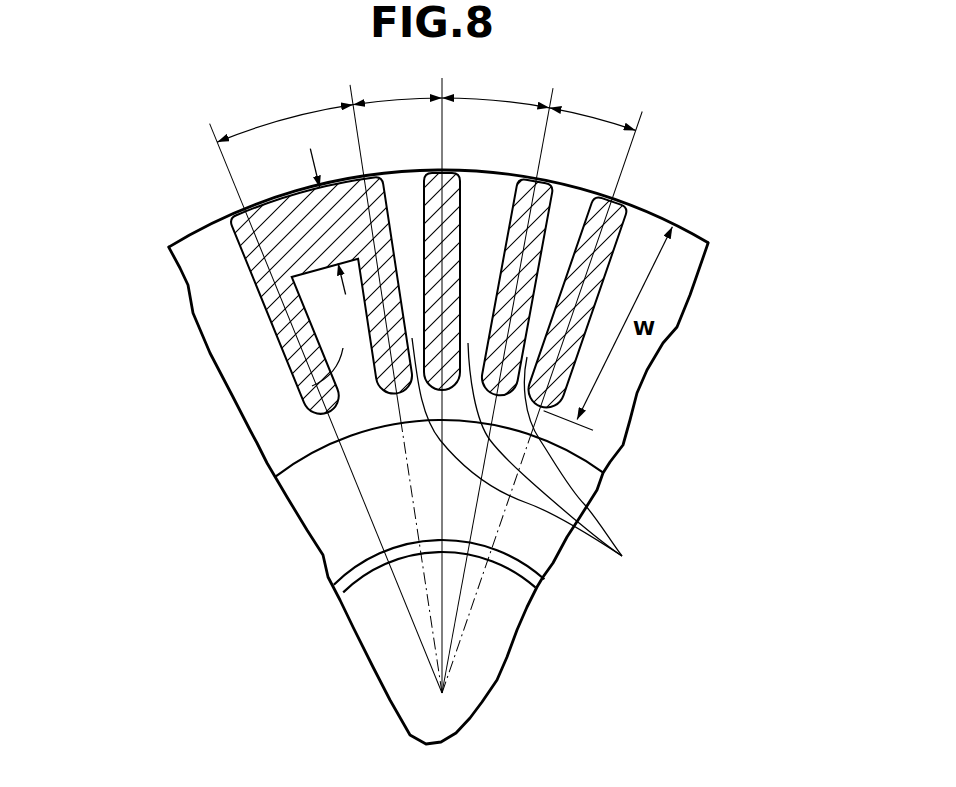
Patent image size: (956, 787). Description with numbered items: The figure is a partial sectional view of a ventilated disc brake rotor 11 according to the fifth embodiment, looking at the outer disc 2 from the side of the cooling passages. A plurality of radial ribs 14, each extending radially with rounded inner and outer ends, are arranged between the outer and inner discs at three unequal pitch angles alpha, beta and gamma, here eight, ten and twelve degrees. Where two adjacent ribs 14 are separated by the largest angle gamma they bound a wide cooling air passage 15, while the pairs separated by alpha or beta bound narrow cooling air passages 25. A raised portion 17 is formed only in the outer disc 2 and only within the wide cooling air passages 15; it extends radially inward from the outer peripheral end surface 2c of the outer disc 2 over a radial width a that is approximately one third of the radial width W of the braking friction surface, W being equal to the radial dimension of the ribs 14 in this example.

The outer disc 2 is at (207, 291).
The outer peripheral end surface 2c is at (643, 207).
The ventilated disc brake rotor 11 is at (246, 434).
The radial rib 14 is at (368, 306).
The wide cooling air passage 15 is at (300, 388).
The raised portion 17 is at (279, 206).
The narrow cooling air passage 25 is at (618, 552).